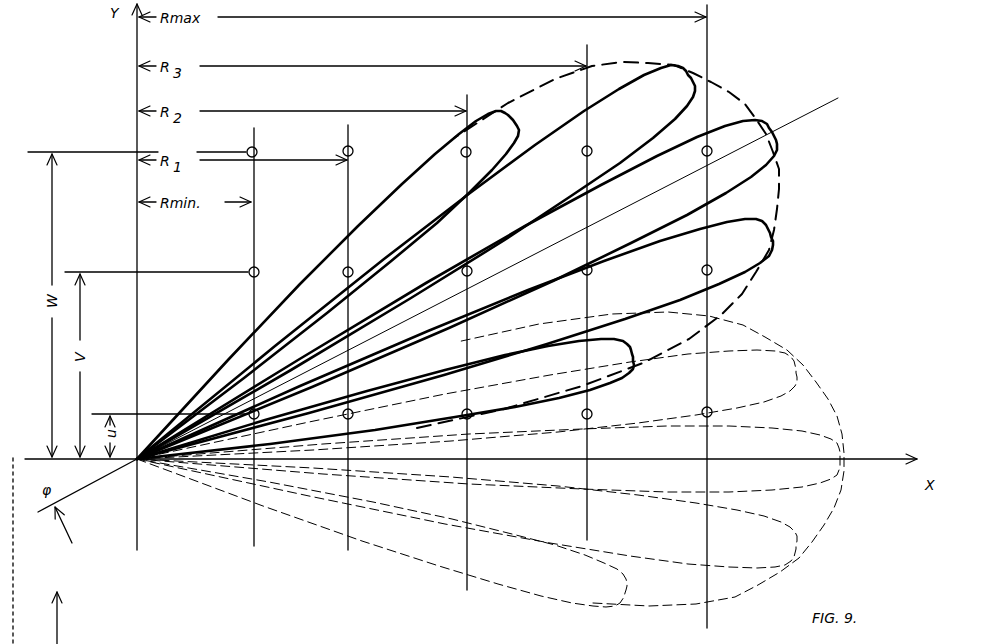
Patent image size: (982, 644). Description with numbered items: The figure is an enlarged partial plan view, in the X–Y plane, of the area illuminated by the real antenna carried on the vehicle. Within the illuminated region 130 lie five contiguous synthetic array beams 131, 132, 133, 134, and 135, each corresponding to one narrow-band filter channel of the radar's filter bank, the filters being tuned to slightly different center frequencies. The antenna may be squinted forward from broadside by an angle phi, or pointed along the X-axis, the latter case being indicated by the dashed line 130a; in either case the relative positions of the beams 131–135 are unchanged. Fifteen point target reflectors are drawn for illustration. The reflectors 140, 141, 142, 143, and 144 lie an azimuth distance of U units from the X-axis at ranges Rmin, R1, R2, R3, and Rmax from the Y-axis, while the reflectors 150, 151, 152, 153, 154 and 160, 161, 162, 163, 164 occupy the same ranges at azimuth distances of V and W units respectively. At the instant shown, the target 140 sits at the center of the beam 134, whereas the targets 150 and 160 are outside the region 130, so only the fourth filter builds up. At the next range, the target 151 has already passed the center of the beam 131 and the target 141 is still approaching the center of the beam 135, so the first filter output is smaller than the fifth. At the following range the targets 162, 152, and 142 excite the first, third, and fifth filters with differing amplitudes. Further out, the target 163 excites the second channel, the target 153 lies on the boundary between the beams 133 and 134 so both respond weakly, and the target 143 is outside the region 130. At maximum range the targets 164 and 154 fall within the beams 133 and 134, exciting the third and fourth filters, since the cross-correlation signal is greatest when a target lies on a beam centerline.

The region illuminated by the real antenna 130 is at (786, 178).
The dashed line 130a is at (836, 428).
The synthetic array beam 131 is at (500, 112).
The synthetic array beam 132 is at (668, 67).
The synthetic array beam 133 is at (765, 125).
The synthetic array beam 134 is at (772, 232).
The synthetic array beam 135 is at (628, 342).
The point target reflector 140 is at (252, 419).
The point target reflector 141 is at (351, 418).
The point target reflector 142 is at (470, 418).
The point target reflector 143 is at (590, 418).
The point target reflector 144 is at (710, 416).
The point target reflector 150 is at (257, 267).
The point target reflector 151 is at (352, 268).
The point target reflector 152 is at (472, 269).
The point target reflector 153 is at (591, 266).
The point target reflector 154 is at (711, 266).
The point target reflector 160 is at (256, 147).
The point target reflector 161 is at (352, 147).
The point target reflector 162 is at (470, 148).
The point target reflector 163 is at (591, 147).
The point target reflector 164 is at (710, 146).